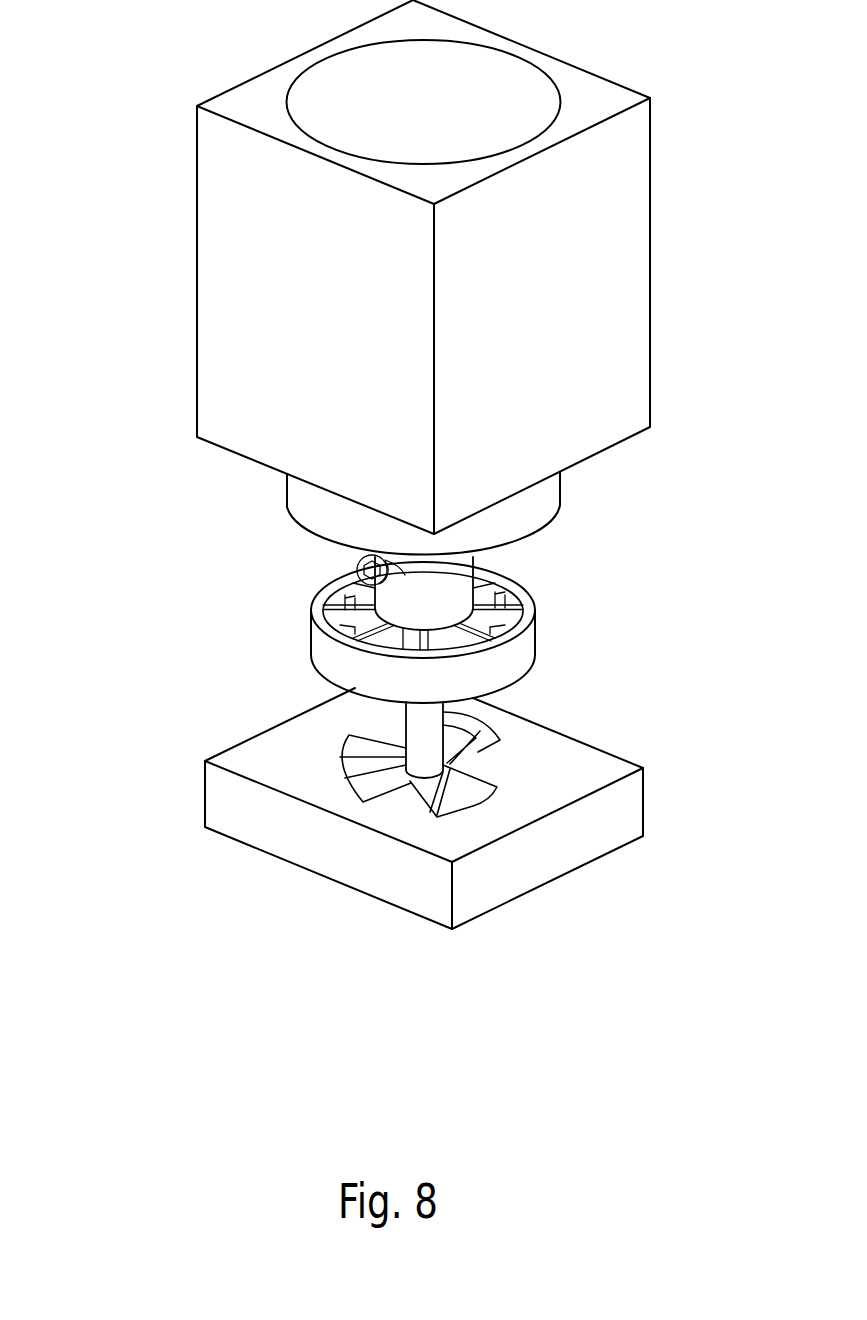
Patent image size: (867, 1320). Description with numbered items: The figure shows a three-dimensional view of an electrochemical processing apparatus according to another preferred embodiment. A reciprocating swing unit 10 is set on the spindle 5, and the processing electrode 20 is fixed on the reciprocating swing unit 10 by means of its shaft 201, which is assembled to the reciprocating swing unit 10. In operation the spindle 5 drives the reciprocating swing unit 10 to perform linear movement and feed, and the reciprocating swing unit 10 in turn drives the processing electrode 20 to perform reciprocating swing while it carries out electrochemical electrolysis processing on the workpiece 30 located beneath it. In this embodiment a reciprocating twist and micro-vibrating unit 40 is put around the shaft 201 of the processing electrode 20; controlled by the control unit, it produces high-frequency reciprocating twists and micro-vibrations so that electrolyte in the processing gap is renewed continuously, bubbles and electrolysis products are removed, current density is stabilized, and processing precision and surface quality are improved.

The spindle 5 is at (240, 275).
The reciprocating swing unit 10 is at (298, 493).
The reciprocating twist and micro-vibrating unit 40 is at (565, 613).
The shaft 201 is at (420, 722).
The processing electrode 20 is at (532, 703).
The workpiece 30 is at (230, 803).